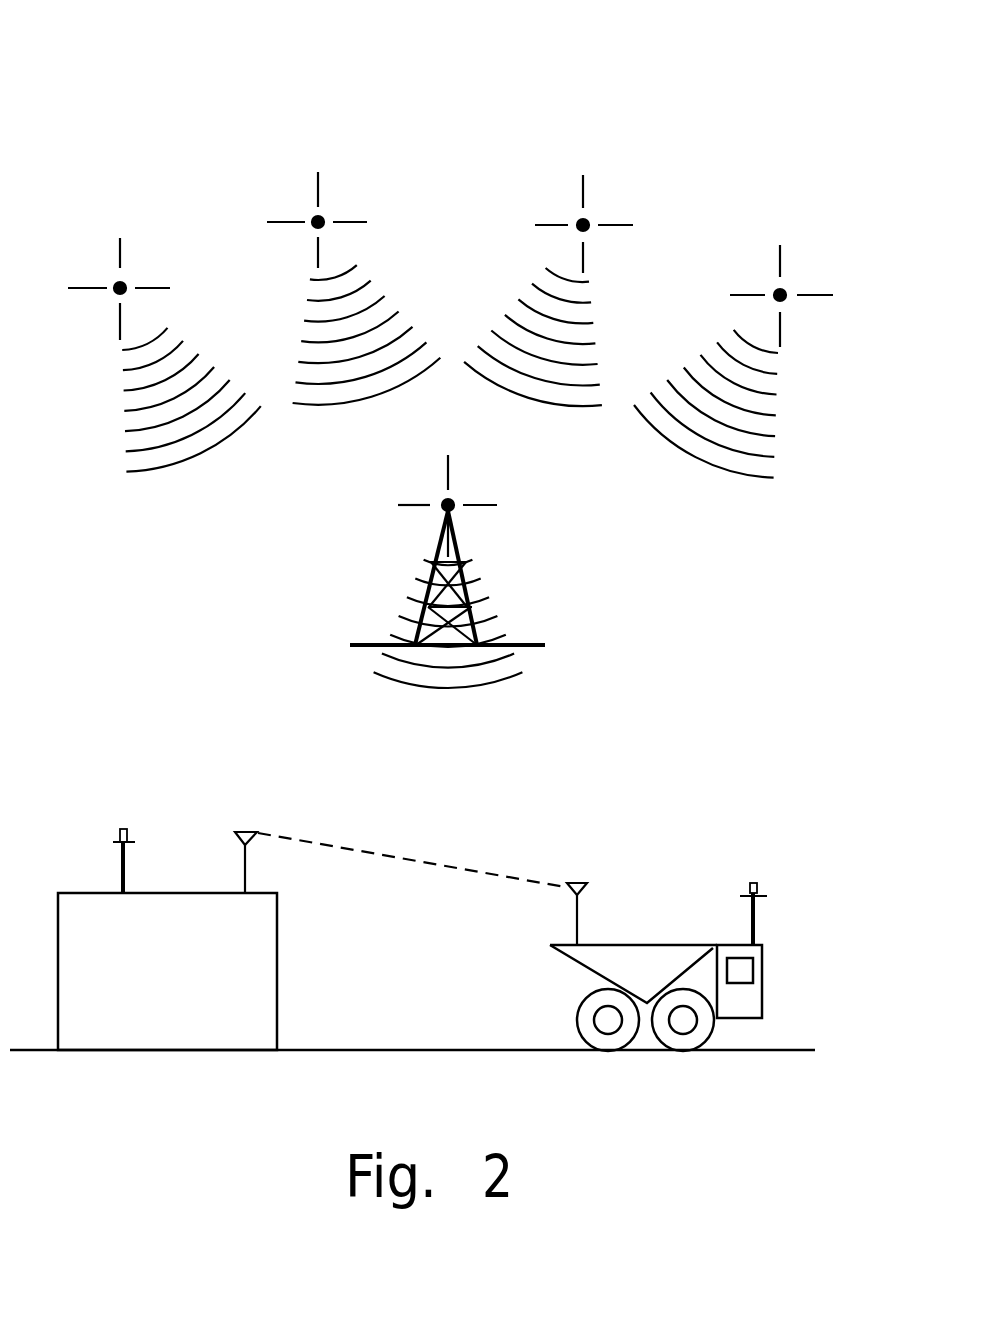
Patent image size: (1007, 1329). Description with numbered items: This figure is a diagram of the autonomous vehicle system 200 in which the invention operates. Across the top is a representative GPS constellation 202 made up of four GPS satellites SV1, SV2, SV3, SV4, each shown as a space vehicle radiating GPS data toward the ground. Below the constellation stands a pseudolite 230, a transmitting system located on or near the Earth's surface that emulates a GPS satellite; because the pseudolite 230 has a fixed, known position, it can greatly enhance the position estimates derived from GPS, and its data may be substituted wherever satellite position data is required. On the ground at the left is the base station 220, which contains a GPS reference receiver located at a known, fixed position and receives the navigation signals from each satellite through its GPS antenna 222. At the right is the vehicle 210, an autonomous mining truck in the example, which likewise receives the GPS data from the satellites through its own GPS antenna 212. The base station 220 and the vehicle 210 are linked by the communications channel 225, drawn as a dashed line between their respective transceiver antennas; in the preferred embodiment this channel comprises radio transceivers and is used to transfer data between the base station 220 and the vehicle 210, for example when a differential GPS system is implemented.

The autonomous vehicle system 200 is at (158, 39).
The GPS constellation 202 is at (475, 285).
The GPS satellite SV1 is at (164, 349).
The GPS satellite SV2 is at (353, 277).
The GPS satellite SV3 is at (571, 283).
The GPS satellite SV4 is at (758, 352).
The pseudolite 230 is at (457, 571).
The base station 220 is at (200, 983).
The GPS antenna 222 is at (154, 830).
The communications channel 225 is at (411, 841).
The vehicle 210 is at (708, 935).
The GPS antenna 212 is at (783, 882).